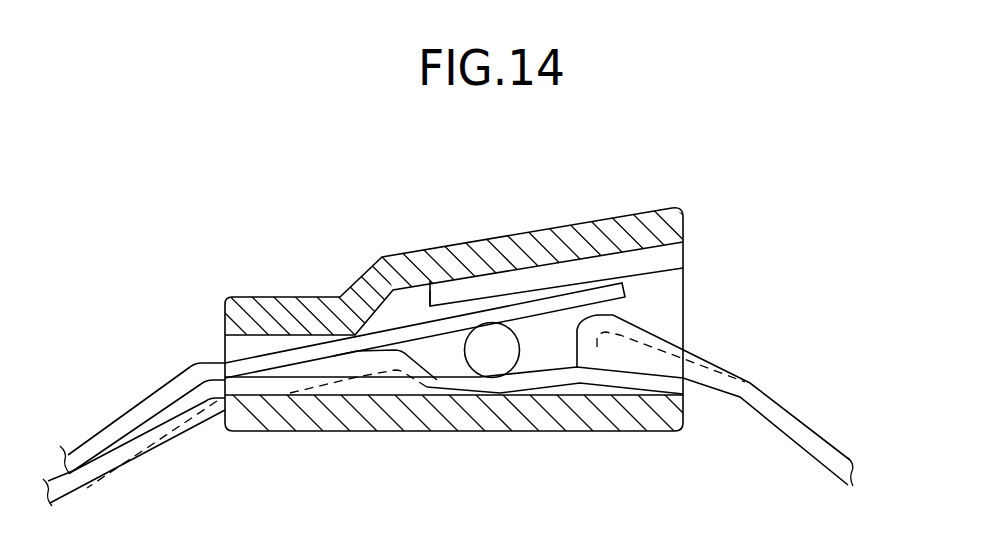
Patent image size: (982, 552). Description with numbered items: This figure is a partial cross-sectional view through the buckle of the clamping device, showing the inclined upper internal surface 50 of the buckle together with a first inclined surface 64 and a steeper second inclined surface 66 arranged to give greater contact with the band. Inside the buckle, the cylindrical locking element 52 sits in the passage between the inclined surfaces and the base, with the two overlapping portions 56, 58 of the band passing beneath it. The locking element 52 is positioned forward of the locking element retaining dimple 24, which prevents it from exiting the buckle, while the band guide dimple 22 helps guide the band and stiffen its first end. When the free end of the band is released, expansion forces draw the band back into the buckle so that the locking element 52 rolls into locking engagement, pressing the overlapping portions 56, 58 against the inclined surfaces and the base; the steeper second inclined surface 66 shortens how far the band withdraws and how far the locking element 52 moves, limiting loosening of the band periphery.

The band guide dimple 22 is at (382, 362).
The locking element retaining dimple 24 is at (645, 340).
The inclined surface 50 is at (657, 278).
The locking element 52 is at (500, 340).
The overlapping portion of the band 56 is at (477, 315).
The overlapping portion of the band 58 is at (513, 378).
The first inclined surface 64 is at (611, 285).
The second inclined surface 66 is at (430, 317).